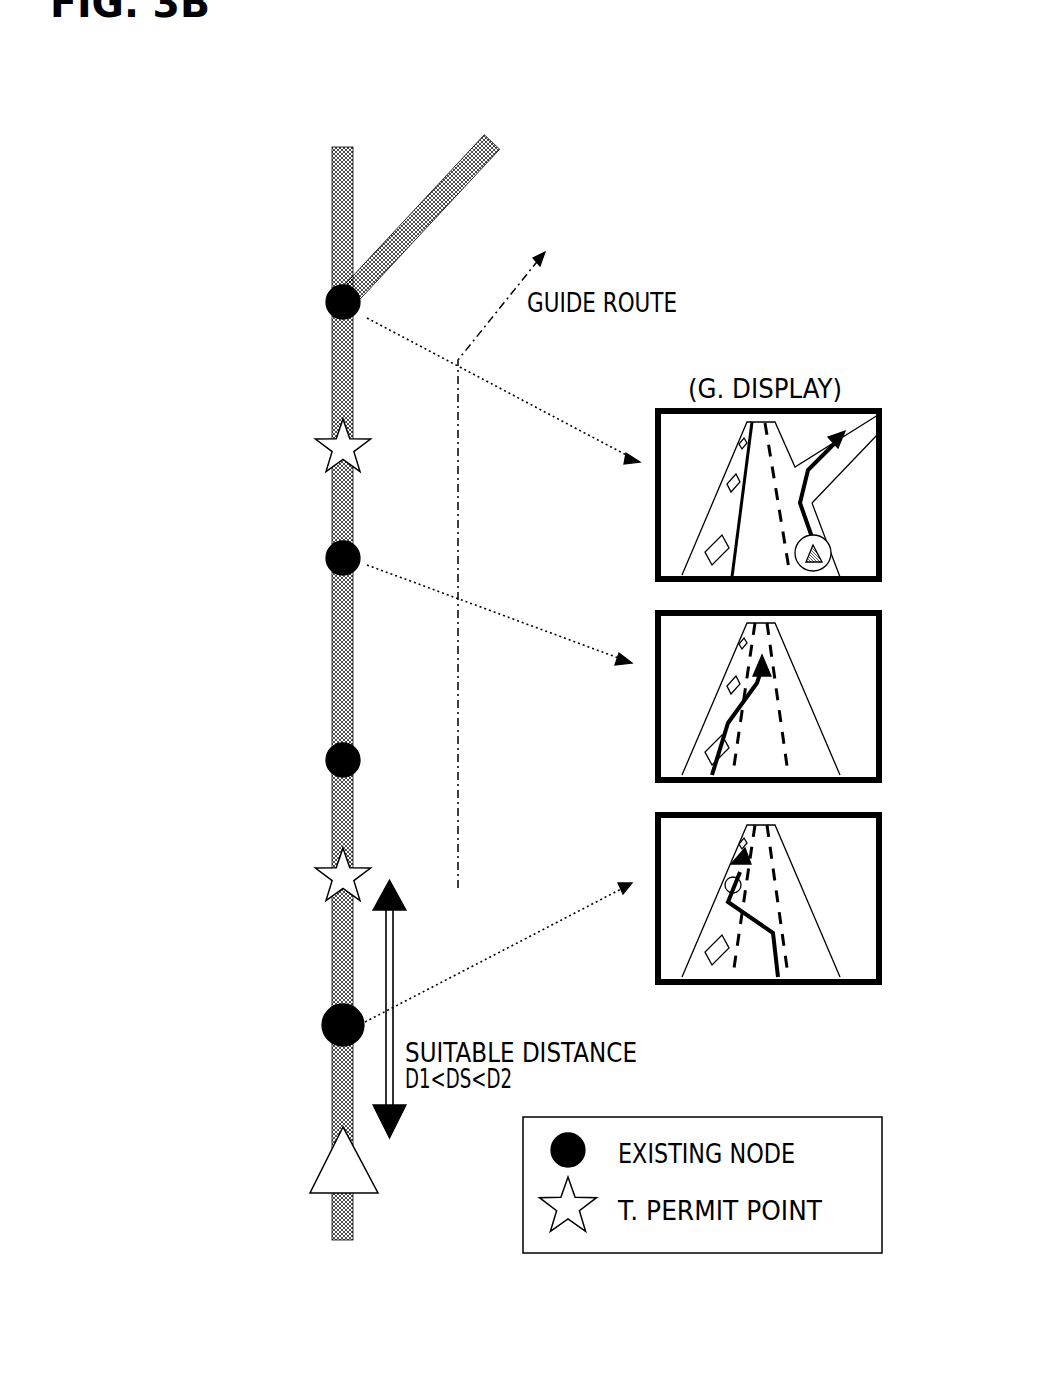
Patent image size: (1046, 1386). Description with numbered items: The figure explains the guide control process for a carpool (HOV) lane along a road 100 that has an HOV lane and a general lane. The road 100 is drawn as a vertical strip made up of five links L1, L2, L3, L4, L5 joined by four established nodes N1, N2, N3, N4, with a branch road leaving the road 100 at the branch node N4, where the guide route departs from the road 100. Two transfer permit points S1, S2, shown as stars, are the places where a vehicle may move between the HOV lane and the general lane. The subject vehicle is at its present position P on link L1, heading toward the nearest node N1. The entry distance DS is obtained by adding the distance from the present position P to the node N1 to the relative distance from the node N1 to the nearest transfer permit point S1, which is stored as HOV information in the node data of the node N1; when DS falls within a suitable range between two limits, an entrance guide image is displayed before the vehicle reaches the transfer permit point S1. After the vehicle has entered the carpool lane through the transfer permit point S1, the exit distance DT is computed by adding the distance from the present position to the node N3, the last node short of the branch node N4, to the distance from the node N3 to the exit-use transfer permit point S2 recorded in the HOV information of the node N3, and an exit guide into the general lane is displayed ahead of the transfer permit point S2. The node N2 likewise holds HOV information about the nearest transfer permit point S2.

The road 100 is at (393, 643).
The link L1 is at (357, 1132).
The link L2 is at (359, 892).
The link L3 is at (359, 659).
The link L4 is at (359, 430).
The link L5 is at (321, 224).
The node N1 is at (322, 1025).
The node N2 is at (326, 760).
The node N3 is at (326, 558).
The branch node N4 is at (326, 302).
The transfer permit point S1 is at (325, 874).
The transfer permit point S2 is at (325, 446).
The present position P is at (344, 1160).